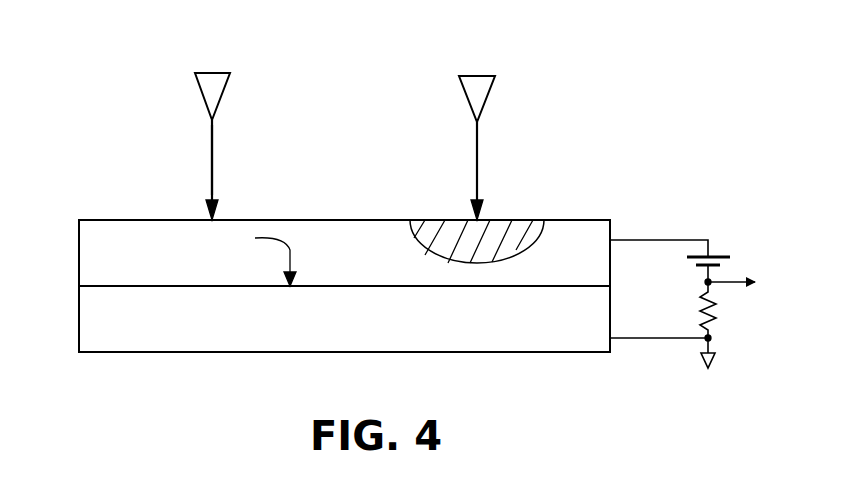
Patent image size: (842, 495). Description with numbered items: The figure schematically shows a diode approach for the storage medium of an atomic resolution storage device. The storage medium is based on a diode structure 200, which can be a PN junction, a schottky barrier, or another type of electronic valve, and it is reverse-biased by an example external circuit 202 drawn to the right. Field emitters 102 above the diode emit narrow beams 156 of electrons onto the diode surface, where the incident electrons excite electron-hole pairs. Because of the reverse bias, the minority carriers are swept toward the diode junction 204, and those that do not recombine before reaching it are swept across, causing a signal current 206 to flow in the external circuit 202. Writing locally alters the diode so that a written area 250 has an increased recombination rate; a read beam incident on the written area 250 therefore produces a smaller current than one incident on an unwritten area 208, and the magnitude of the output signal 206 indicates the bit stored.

The field emitter 102 is at (220, 73).
The narrow beam of electrons 156 is at (210, 155).
The diode structure 200 is at (78, 250).
The diode junction 204 is at (186, 286).
The unwritten area 208 is at (245, 220).
The written area 250 is at (525, 222).
The external circuit 202 is at (718, 243).
The signal current 206 is at (704, 319).